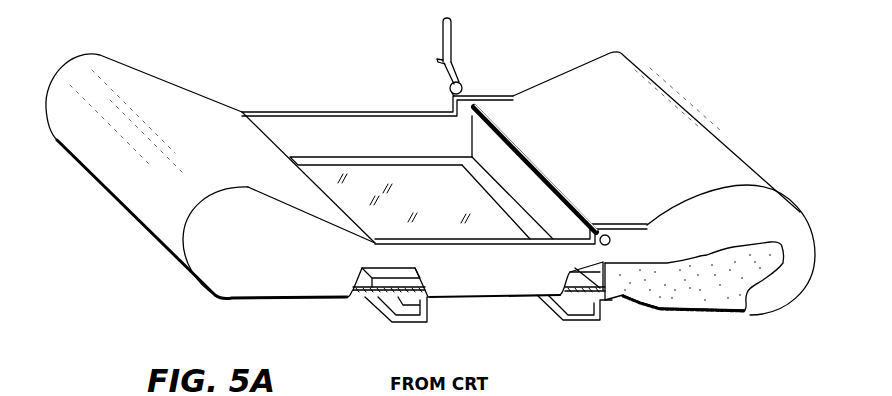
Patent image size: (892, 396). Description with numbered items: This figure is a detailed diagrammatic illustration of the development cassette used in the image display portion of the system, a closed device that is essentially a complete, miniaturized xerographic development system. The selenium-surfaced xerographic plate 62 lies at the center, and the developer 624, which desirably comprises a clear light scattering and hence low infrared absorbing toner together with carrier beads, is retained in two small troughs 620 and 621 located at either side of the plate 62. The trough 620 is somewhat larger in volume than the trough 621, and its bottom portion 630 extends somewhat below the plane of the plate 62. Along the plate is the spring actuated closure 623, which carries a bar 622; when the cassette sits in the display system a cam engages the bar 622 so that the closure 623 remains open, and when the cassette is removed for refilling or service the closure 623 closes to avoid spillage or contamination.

The xerographic plate 62 is at (393, 184).
The trough 620 is at (787, 294).
The trough 621 is at (236, 284).
The bar 622 is at (454, 28).
The spring actuated closure 623 is at (510, 176).
The developer 624 is at (648, 295).
The bottom portion 630 is at (710, 312).